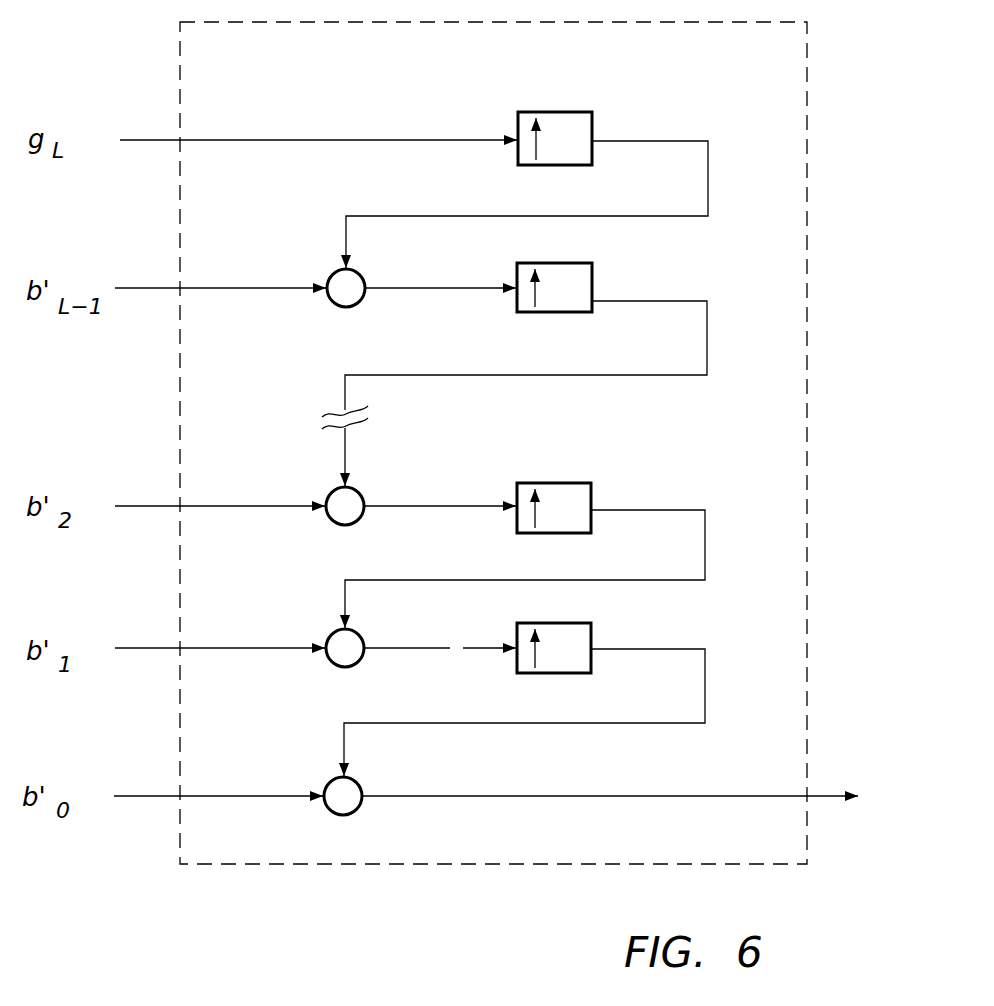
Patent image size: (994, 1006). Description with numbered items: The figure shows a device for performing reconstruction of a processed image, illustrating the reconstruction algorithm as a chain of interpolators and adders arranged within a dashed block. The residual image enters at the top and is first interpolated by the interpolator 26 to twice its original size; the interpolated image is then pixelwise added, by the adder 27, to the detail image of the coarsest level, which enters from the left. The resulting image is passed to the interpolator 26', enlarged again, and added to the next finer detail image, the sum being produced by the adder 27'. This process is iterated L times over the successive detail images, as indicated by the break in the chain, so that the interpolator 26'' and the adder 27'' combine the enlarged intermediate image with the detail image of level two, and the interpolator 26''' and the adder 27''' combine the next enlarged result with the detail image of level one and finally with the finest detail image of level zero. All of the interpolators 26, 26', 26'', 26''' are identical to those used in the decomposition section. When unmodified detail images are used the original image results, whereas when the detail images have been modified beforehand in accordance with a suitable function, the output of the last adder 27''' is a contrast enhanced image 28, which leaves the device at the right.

The interpolator 26 is at (591, 110).
The interpolator 26' is at (596, 279).
The interpolator 26'' is at (600, 497).
The interpolator 26''' is at (604, 637).
The adder 27 is at (374, 263).
The adder 27' is at (375, 481).
The adder 27'' is at (382, 624).
The adder 27''' is at (383, 774).
The contrast enhanced image 28 is at (822, 796).